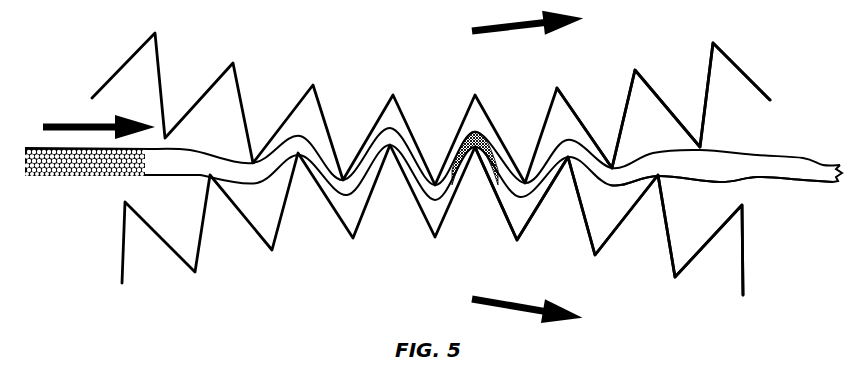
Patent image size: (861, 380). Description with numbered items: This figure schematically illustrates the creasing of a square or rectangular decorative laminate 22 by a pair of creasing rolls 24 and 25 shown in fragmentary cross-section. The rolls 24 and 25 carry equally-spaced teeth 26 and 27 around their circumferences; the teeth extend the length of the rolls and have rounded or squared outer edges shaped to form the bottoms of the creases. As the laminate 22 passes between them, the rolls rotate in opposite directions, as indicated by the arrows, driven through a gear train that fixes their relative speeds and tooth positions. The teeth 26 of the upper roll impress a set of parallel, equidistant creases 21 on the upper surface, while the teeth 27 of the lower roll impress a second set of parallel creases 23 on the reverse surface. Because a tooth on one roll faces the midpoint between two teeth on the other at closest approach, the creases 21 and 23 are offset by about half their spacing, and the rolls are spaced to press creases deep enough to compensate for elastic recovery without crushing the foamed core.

The creases 21 is at (717, 165).
The laminate 22 is at (74, 184).
The creases 23 is at (668, 172).
The creasing roll 24 is at (318, 60).
The creasing roll 25 is at (302, 248).
The teeth 26 is at (627, 117).
The teeth 27 is at (523, 222).